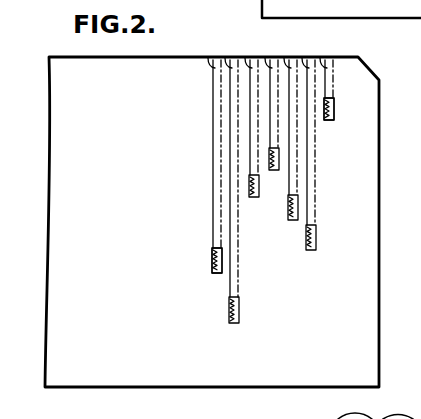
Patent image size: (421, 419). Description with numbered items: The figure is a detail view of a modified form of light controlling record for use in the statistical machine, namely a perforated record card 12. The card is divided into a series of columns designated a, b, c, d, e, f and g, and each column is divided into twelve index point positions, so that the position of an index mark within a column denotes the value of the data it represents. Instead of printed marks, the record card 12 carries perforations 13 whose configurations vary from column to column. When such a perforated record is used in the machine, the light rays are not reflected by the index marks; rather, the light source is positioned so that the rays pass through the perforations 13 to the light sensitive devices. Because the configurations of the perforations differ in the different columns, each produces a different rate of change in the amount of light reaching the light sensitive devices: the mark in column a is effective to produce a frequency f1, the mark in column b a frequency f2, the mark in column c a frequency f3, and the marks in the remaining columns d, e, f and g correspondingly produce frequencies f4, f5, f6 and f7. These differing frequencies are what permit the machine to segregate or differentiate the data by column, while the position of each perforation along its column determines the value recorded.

The record card 12 is at (373, 297).
The perforations 13 is at (212, 248).
The column a is at (200, 165).
The column b is at (220, 195).
The column c is at (253, 132).
The column d is at (272, 118).
The column e is at (277, 145).
The column f is at (299, 163).
The column g is at (326, 99).
The frequency f1 is at (211, 262).
The frequency f2 is at (229, 314).
The frequency f3 is at (251, 190).
The frequency f4 is at (270, 170).
The frequency f5 is at (288, 216).
The frequency f6 is at (307, 250).
The frequency f7 is at (324, 120).